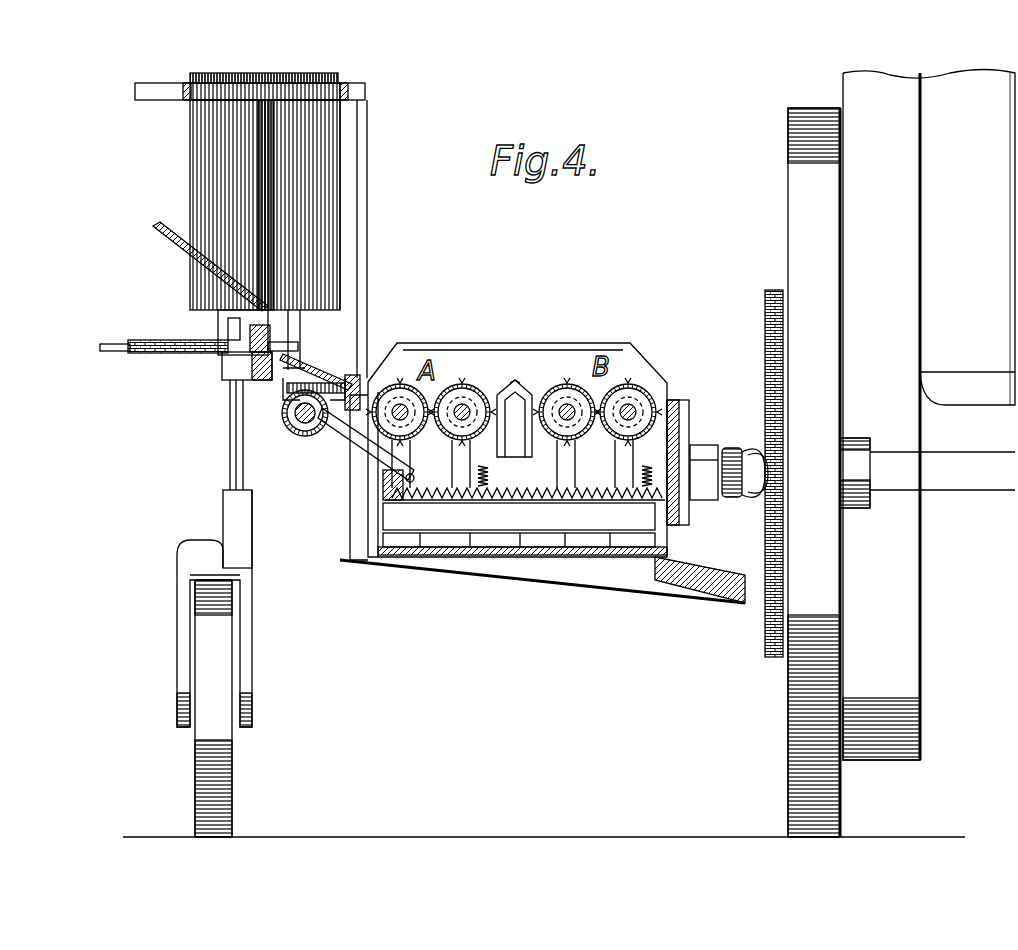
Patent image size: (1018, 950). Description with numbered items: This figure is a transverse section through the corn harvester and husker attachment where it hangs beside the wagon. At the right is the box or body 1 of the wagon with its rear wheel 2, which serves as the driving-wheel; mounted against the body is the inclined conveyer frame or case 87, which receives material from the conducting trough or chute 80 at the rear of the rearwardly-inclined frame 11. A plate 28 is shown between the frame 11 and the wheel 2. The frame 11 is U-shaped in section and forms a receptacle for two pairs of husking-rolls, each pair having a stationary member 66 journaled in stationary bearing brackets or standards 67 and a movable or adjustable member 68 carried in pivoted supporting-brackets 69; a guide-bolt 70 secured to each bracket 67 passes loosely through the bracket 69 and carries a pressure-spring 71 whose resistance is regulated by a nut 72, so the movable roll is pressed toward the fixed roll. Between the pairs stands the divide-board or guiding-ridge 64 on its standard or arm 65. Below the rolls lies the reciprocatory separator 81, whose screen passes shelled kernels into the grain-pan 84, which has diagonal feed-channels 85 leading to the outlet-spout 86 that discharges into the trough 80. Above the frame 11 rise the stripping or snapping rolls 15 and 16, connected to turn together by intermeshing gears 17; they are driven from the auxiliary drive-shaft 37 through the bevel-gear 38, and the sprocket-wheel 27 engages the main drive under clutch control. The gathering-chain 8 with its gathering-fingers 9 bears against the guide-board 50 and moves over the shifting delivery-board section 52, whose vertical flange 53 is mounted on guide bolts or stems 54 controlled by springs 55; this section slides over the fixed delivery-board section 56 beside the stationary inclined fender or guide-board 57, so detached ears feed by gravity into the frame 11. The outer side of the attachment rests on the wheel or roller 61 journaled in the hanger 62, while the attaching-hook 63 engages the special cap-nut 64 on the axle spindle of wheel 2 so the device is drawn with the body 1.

The box or body of a wagon 1 is at (929, 238).
The rear wheel 2 is at (814, 472).
The gathering-chain 8 is at (135, 342).
The gathering-fingers 9 is at (105, 343).
The rearwardly-inclined frame 11 is at (352, 560).
The stationary snapping-roll 15 is at (330, 190).
The movable snapping-roll 16 is at (200, 172).
The intermeshing gears 17 is at (190, 75).
The sprocket-wheel 27 is at (185, 103).
The plate 28 is at (770, 292).
The auxiliary drive-shaft 37 is at (232, 428).
The bevel-gear 38 is at (282, 413).
The guide-board 50 is at (225, 365).
The shifting delivery-board section 52 is at (302, 360).
The vertical flange 53 is at (225, 338).
The guide bolts or stems 54 is at (352, 375).
The springs 55 is at (346, 372).
The fixed delivery-board section 56 is at (287, 388).
The stationary inclined fender or guide-board 57 is at (156, 228).
The wheel or roller 61 is at (205, 615).
The hanger 62 is at (220, 562).
The attaching-hook 63 is at (748, 498).
The cap-nut 64 is at (515, 382).
The standard or arm 65 is at (530, 395).
The stationary husking-roll member 66 is at (394, 384).
The stationary bearing brackets or standards 67 is at (380, 450).
The movable or adjustable husking-roll member 68 is at (478, 378).
The pivoted supporting-brackets 69 is at (452, 452).
The guide-bolt 70 is at (415, 488).
The pressure-spring 71 is at (470, 488).
The nut 72 is at (515, 460).
The conducting trough or chute 80 is at (605, 578).
The reciprocatory separator 81 is at (385, 482).
The grain-pan 84 is at (445, 560).
The feed-channels 85 is at (540, 540).
The outlet-spout 86 is at (690, 590).
The inclined conveyer frame or case 87 is at (927, 416).